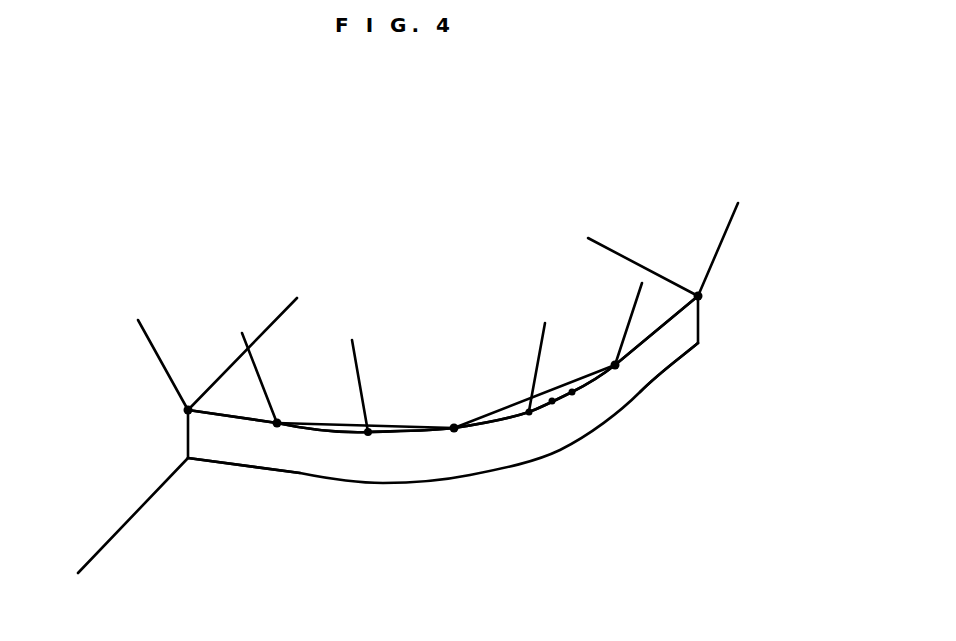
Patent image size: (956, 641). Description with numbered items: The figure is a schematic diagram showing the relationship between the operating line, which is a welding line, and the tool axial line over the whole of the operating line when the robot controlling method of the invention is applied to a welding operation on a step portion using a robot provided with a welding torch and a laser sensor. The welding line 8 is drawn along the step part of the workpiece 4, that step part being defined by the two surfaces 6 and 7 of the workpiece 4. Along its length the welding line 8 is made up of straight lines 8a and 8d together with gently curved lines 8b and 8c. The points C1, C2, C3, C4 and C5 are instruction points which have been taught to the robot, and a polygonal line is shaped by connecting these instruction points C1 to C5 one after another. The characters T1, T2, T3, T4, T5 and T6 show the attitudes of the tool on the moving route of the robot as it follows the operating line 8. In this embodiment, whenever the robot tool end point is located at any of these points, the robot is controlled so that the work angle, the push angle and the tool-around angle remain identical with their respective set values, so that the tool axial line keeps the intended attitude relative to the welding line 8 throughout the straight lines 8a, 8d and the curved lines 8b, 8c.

The workpiece 4 is at (202, 338).
The surface of the workpiece 6 is at (290, 335).
The surface of the workpiece 7 is at (158, 537).
The welding line 8 is at (677, 320).
The straight line 8a is at (655, 333).
The gently curved line 8b is at (507, 418).
The gently curved line 8c is at (393, 435).
The straight line 8d is at (240, 420).
The instruction point C1 is at (698, 296).
The instruction point C2 is at (615, 365).
The instruction point C3 is at (454, 430).
The instruction point C4 is at (277, 425).
The instruction point C5 is at (178, 410).
The tool attitude T1 is at (725, 232).
The tool attitude T2 is at (628, 313).
The tool attitude T3 is at (533, 355).
The tool attitude T4 is at (355, 372).
The tool attitude T5 is at (257, 375).
The tool attitude T6 is at (145, 343).